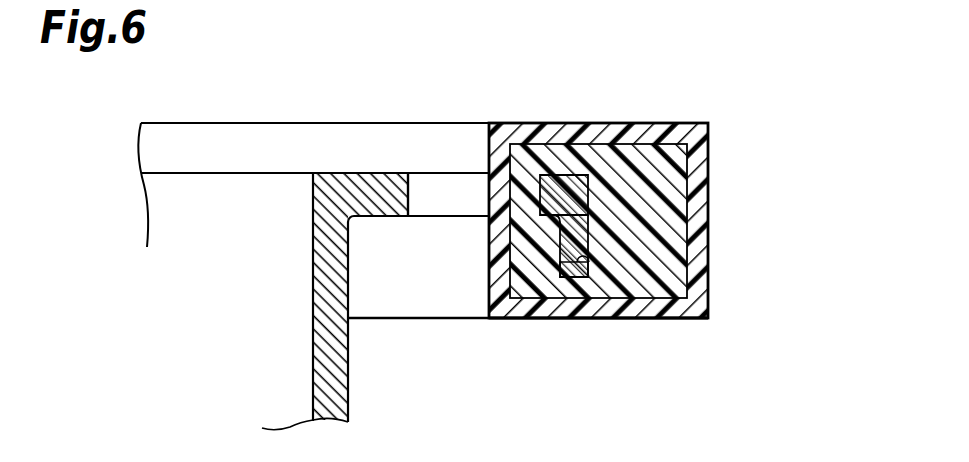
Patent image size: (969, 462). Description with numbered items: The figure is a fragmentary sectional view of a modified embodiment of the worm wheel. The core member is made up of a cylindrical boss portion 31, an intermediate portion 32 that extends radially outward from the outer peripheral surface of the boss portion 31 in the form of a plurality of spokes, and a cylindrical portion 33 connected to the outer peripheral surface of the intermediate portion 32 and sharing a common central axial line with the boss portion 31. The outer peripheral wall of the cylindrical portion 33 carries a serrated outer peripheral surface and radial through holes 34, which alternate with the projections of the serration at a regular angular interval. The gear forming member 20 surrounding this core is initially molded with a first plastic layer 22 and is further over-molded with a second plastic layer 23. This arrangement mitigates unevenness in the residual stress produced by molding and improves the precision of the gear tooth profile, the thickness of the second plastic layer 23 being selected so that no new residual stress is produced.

The gear forming member 20 is at (651, 214).
The first plastic layer 22 is at (682, 175).
The second plastic layer 23 is at (565, 130).
The boss portion 31 is at (345, 390).
The intermediate portion 32 is at (370, 178).
The cylindrical portion 33 is at (580, 207).
The through holes 34 is at (592, 258).